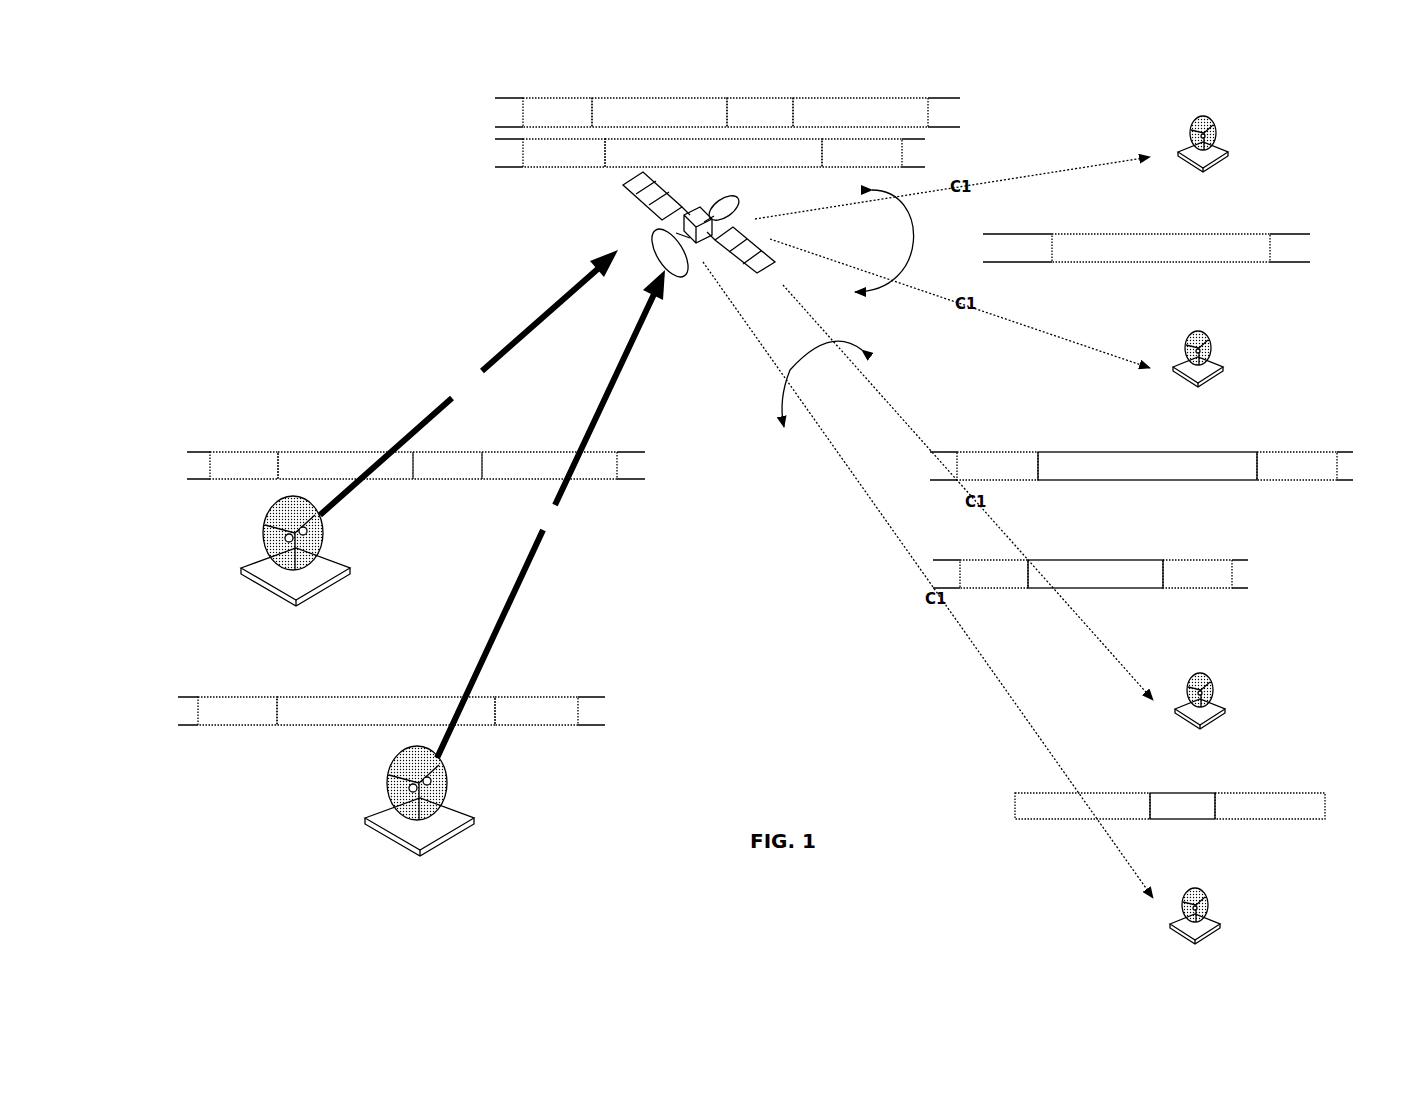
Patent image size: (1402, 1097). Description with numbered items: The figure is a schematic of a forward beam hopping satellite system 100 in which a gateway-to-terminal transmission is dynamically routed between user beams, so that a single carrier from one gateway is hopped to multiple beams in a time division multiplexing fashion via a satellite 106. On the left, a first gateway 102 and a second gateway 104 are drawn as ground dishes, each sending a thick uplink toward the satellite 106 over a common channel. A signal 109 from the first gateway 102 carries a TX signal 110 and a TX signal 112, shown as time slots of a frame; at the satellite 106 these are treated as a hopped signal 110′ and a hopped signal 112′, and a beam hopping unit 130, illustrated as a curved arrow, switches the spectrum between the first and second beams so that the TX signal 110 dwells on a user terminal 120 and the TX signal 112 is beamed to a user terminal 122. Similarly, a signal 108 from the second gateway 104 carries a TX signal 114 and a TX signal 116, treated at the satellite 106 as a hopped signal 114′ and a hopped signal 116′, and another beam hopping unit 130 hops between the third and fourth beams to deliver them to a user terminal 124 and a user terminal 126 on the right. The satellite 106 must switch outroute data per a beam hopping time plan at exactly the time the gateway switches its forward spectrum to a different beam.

The forward beam hopping satellite system 100 is at (379, 213).
The gateway G1 102 is at (370, 798).
The gateway G2 104 is at (352, 548).
The satellite 106 is at (620, 225).
The signal from G2 108 is at (530, 320).
The signal from G1 109 is at (632, 347).
The TX signal 110 is at (388, 697).
The TX signal 112 is at (238, 697).
The TX signal 114 is at (245, 452).
The TX signal 116 is at (348, 452).
The hopped signal 110′ is at (710, 139).
The hopped signal 112′ is at (562, 139).
The hopped signal 114′ is at (558, 98).
The hopped signal 116′ is at (658, 98).
The user terminal 120 is at (1228, 143).
The user terminal 122 is at (1223, 360).
The user terminal 124 is at (1210, 676).
The user terminal 126 is at (1218, 910).
The beam hopping unit 130 is at (913, 232).